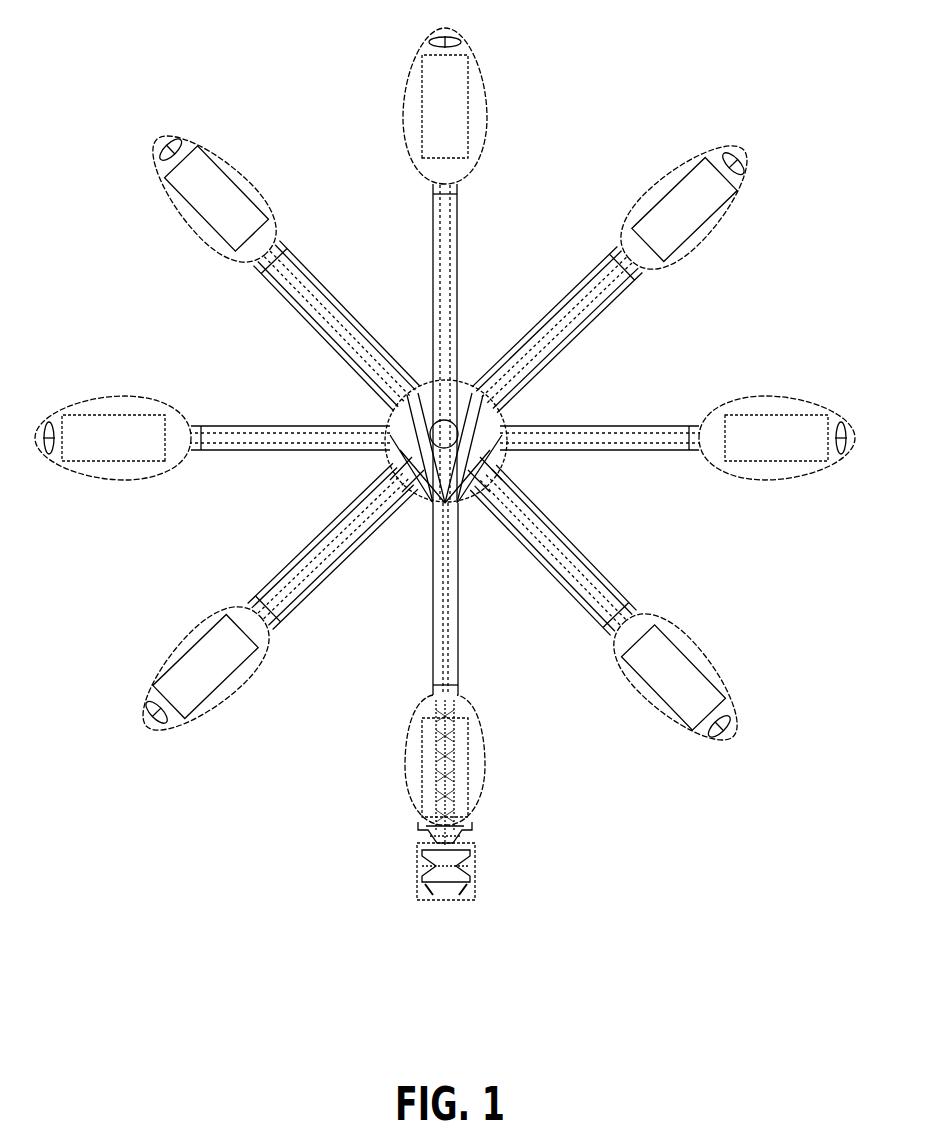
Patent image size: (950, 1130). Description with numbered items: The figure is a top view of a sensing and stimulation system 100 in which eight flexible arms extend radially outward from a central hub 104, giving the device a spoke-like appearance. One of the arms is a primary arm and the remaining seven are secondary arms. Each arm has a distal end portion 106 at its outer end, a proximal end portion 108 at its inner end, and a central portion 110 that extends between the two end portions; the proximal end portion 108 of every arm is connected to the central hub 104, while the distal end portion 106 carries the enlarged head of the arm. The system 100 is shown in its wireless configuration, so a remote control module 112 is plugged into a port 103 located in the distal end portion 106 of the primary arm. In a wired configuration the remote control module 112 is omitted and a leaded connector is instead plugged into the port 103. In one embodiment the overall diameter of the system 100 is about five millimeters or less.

The sensing and stimulation system 100 is at (128, 90).
The port 103 is at (474, 829).
The central hub 104 is at (477, 372).
The distal end portion 106 is at (256, 164).
The proximal end portion 108 is at (406, 366).
The central portion 110 is at (334, 290).
The remote control module 112 is at (420, 881).